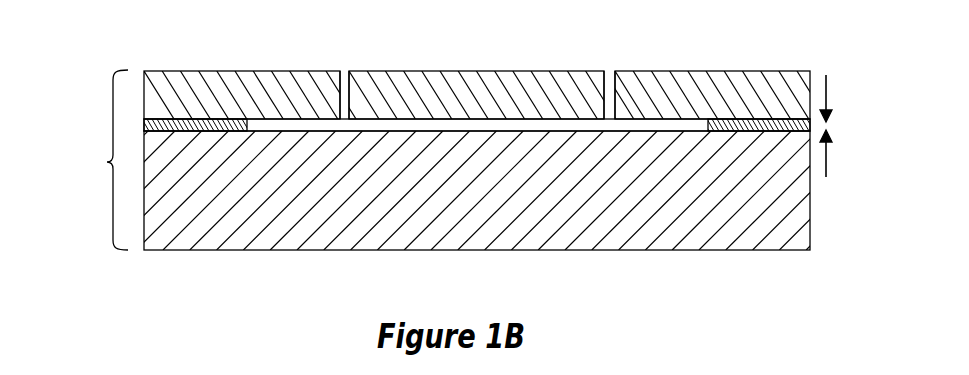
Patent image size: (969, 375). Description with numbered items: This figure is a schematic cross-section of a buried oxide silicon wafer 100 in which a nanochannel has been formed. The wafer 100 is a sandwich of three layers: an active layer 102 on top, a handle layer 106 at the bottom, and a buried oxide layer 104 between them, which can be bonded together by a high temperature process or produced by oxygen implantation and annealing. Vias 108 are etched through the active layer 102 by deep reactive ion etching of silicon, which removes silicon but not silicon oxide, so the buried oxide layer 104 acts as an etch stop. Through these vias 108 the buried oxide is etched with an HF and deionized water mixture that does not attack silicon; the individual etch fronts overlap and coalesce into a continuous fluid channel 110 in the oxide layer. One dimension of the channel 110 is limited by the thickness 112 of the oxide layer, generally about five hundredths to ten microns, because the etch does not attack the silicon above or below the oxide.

The silicon wafer 100 is at (94, 160).
The active layer 102 is at (197, 83).
The buried oxide layer 104 is at (145, 123).
The handle layer 106 is at (465, 230).
The vias 108 is at (343, 85).
The fluid channel 110 is at (465, 125).
The thickness 112 is at (828, 122).